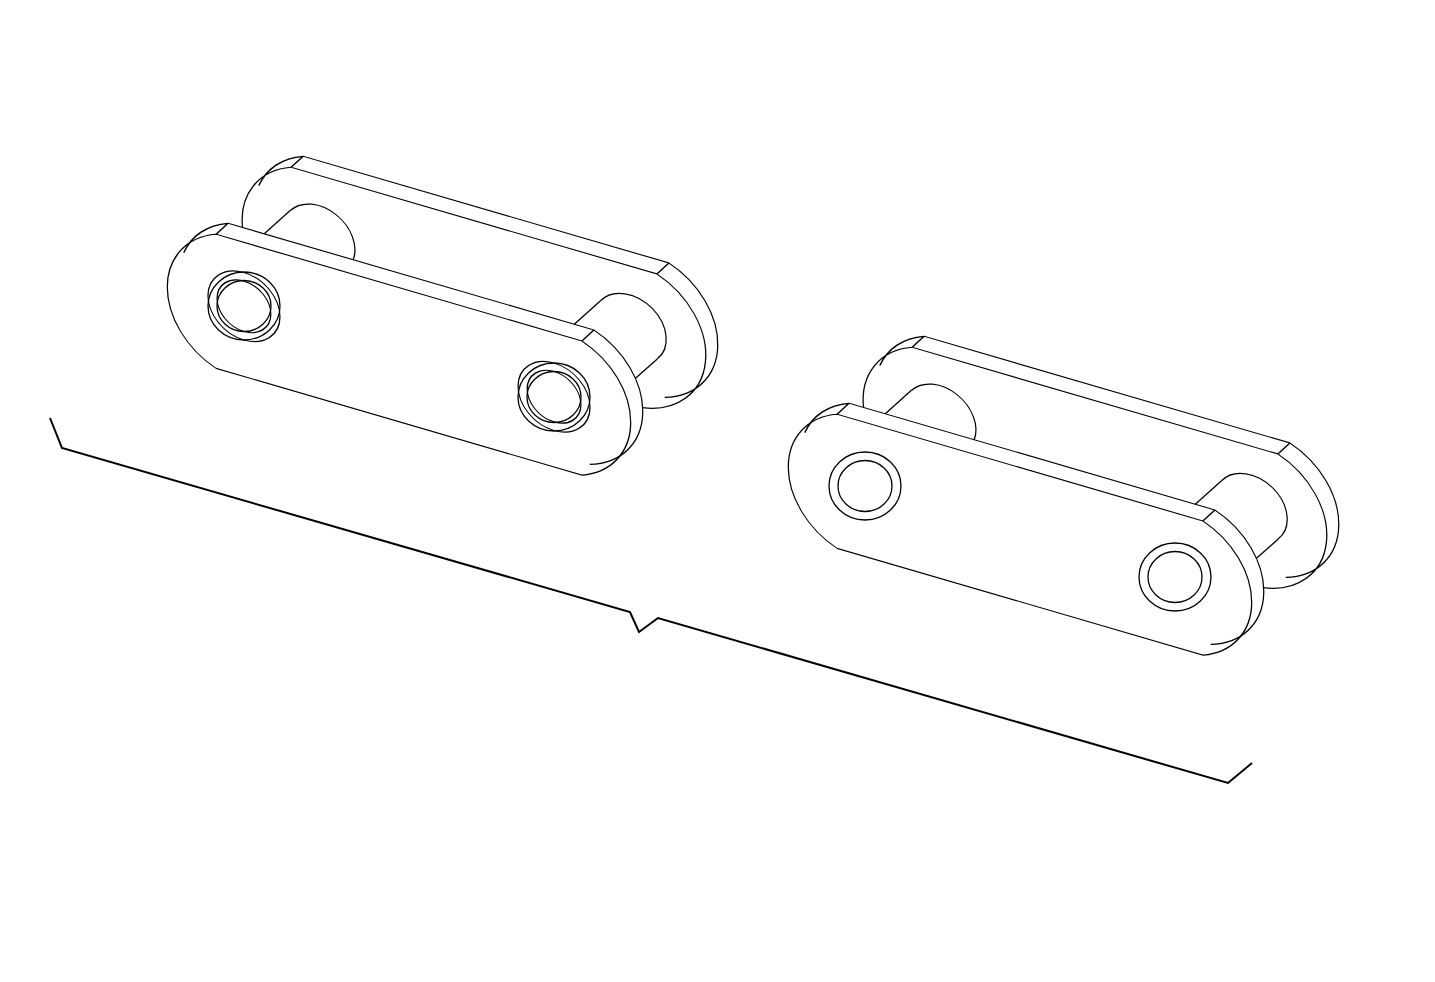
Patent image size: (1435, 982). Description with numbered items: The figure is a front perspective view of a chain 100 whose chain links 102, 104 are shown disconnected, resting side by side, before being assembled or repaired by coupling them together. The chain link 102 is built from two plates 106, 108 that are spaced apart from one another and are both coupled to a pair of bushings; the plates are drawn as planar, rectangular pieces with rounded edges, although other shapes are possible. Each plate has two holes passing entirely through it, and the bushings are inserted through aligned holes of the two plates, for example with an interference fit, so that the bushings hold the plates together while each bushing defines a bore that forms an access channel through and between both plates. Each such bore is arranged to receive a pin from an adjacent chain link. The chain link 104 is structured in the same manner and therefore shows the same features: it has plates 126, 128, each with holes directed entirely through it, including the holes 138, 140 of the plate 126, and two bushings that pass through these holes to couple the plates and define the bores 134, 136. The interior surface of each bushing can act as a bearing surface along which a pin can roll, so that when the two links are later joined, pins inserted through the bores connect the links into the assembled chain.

The chain 100 is at (1013, 163).
The chain link 102 is at (244, 128).
The chain link 104 is at (1202, 387).
The plate 106 is at (353, 382).
The plate 108 is at (457, 236).
The plate 126 is at (973, 562).
The plate 128 is at (1040, 405).
The bore 134 is at (862, 489).
The bore 136 is at (1171, 574).
The hole 138 is at (863, 527).
The hole 140 is at (1177, 610).